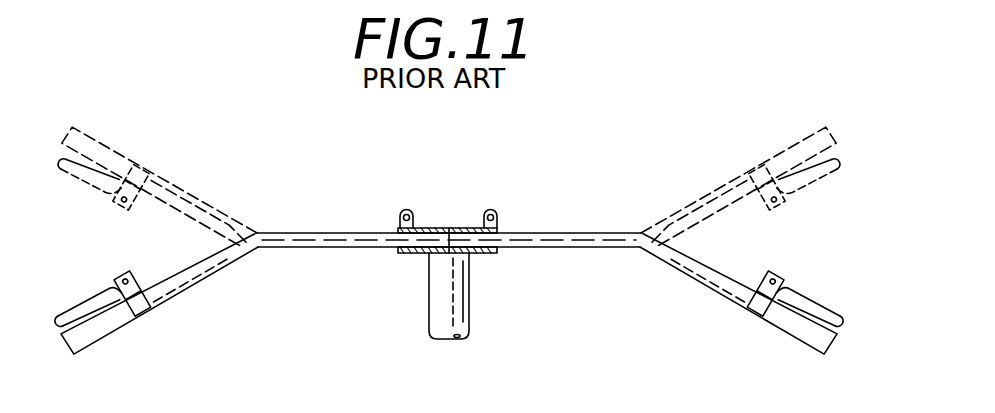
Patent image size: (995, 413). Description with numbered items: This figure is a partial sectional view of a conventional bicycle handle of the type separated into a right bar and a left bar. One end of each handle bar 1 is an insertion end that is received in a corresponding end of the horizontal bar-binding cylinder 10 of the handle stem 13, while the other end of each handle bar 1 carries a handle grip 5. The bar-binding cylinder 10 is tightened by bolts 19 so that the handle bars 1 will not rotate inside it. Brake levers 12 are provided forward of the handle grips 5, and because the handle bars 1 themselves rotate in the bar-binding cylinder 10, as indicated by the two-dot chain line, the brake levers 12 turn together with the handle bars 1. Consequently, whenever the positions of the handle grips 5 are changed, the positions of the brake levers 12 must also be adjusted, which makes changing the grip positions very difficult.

The handle bar 1 is at (311, 248).
The handle grip 5 is at (107, 327).
The bar-binding cylinder 10 is at (412, 252).
The brake lever 12 is at (97, 185).
The handle stem 13 is at (387, 222).
The bolt 19 is at (490, 212).